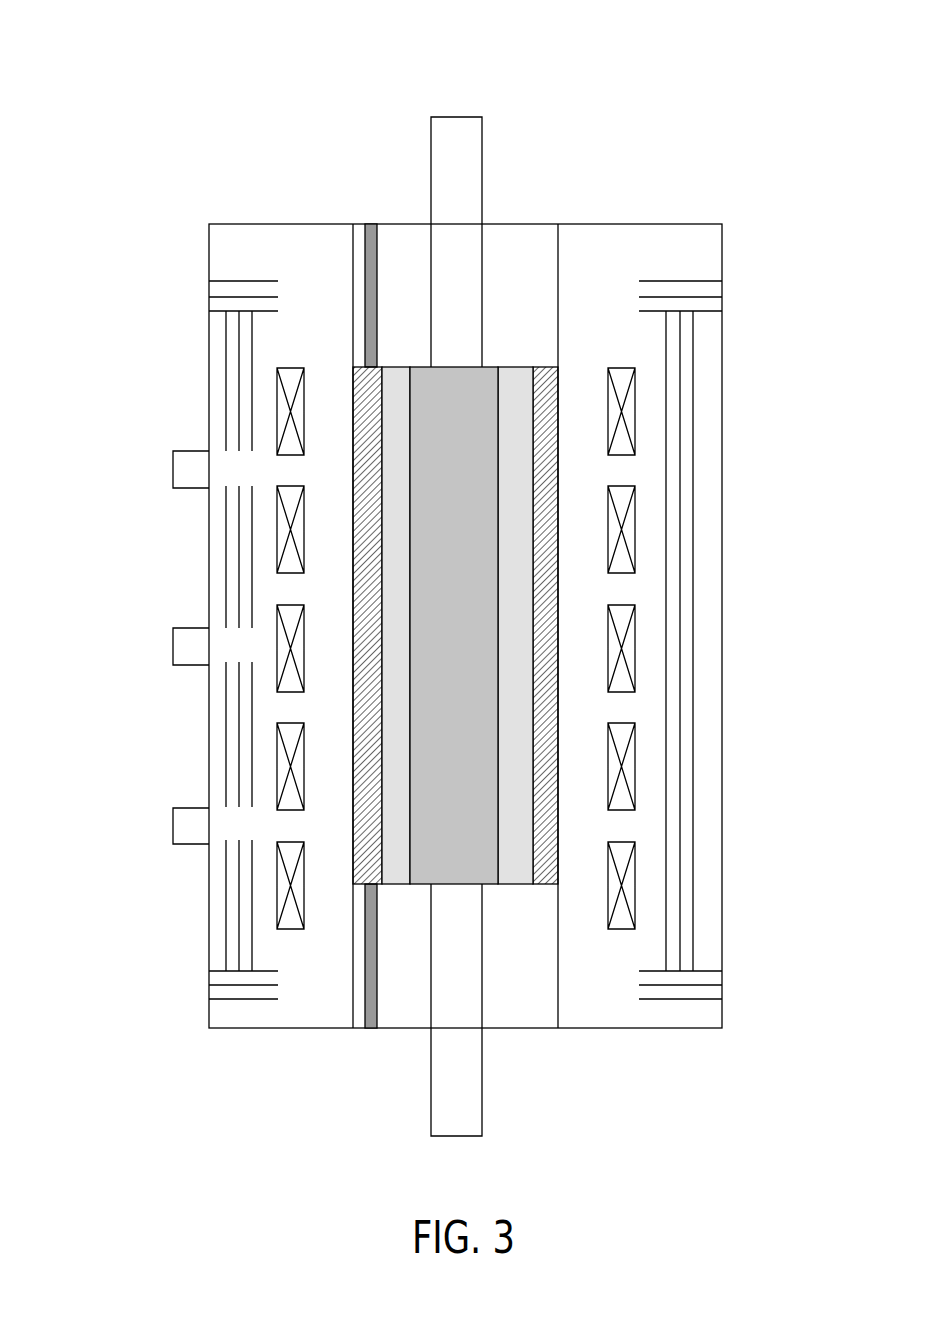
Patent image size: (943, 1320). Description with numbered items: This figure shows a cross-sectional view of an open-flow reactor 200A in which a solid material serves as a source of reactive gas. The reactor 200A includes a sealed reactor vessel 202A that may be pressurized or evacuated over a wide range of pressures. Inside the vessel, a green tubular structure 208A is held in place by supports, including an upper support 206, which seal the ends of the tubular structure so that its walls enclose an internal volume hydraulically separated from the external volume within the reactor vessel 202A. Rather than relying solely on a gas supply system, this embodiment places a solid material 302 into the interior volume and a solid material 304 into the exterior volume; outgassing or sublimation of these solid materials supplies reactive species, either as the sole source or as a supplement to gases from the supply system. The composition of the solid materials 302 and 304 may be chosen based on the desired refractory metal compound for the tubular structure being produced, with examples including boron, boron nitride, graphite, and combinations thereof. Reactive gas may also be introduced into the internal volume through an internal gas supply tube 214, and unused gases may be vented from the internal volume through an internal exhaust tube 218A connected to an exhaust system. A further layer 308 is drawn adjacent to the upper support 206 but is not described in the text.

The open-flow reactor 200A is at (445, 598).
The reactor vessel 202A is at (400, 615).
The internal exhaust tube 218A is at (517, 227).
The internal gas supply tube 214 is at (415, 1034).
The upper spacer layer 308 is at (286, 259).
The upper support 206 is at (295, 987).
The solid material 304 is at (603, 625).
The green tubular structure 208A is at (617, 633).
The solid material 302 is at (268, 625).